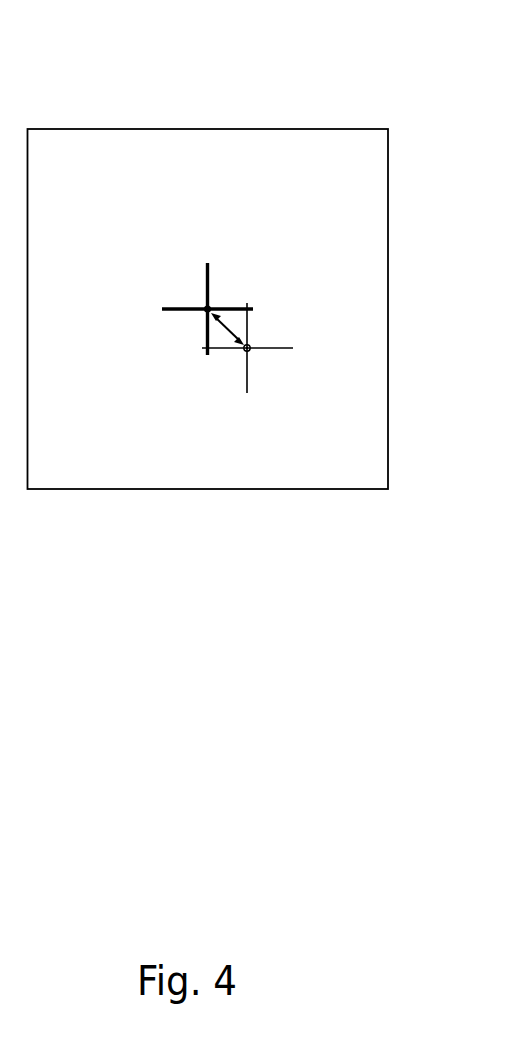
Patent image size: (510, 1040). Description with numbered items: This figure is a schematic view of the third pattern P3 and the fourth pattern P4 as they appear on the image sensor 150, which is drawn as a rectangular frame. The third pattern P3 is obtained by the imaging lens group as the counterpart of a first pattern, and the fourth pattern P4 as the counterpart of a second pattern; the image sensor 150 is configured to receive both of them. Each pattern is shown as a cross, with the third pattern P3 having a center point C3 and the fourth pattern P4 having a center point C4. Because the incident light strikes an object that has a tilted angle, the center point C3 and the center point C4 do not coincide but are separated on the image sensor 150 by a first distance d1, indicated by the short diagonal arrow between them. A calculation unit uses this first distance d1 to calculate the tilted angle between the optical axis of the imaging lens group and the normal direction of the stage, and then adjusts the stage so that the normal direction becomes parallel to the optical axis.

The image sensor 150 is at (461, 60).
The center point of the third pattern C3 is at (207, 309).
The third pattern P3 is at (162, 313).
The center point of the fourth pattern C4 is at (250, 352).
The fourth pattern P4 is at (293, 348).
The first distance d1 is at (228, 323).